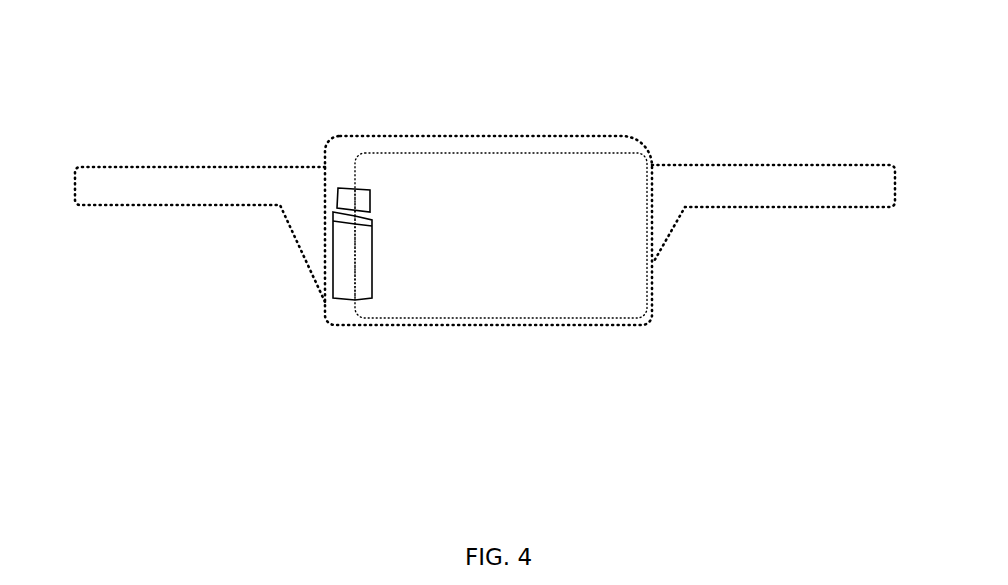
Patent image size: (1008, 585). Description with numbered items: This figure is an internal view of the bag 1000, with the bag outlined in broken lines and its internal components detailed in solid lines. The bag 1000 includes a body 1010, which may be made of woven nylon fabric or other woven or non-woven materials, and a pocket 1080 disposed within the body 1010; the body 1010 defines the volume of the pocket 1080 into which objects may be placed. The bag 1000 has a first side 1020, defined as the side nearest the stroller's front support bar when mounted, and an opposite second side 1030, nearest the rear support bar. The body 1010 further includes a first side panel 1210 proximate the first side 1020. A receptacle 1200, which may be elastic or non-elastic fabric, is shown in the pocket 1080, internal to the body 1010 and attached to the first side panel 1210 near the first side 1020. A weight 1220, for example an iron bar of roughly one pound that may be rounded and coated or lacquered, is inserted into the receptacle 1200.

The bag 1000 is at (485, 331).
The body 1010 is at (458, 327).
The first side 1020 is at (306, 298).
The second side 1030 is at (677, 281).
The pocket 1080 is at (537, 230).
The receptacle 1200 is at (348, 241).
The first side panel 1210 is at (337, 228).
The weight 1220 is at (362, 207).